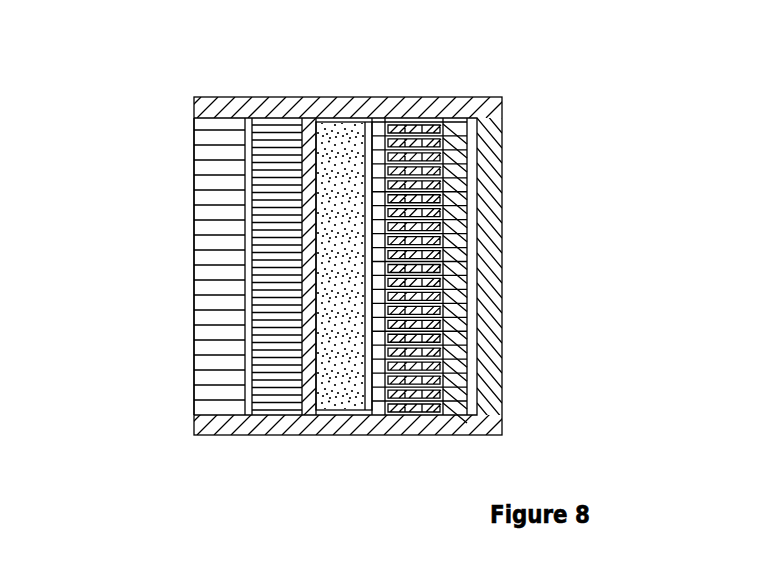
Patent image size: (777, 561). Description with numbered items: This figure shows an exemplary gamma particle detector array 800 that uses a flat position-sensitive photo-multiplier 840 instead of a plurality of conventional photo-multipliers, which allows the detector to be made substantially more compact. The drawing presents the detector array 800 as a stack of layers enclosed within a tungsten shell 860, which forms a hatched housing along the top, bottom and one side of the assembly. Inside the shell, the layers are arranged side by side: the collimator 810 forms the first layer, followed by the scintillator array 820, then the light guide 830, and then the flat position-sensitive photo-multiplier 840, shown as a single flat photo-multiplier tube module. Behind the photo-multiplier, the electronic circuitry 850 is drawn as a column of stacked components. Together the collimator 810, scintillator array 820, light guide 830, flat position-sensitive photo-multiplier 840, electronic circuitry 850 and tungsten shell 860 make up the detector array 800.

The detector array 800 is at (532, 230).
The collimator 810 is at (210, 240).
The scintillator array 820 is at (278, 178).
The light guide 830 is at (308, 140).
The flat position-sensitive photo-multiplier 840 is at (327, 393).
The electronic circuitry 850 is at (457, 322).
The tungsten shell 860 is at (515, 118).